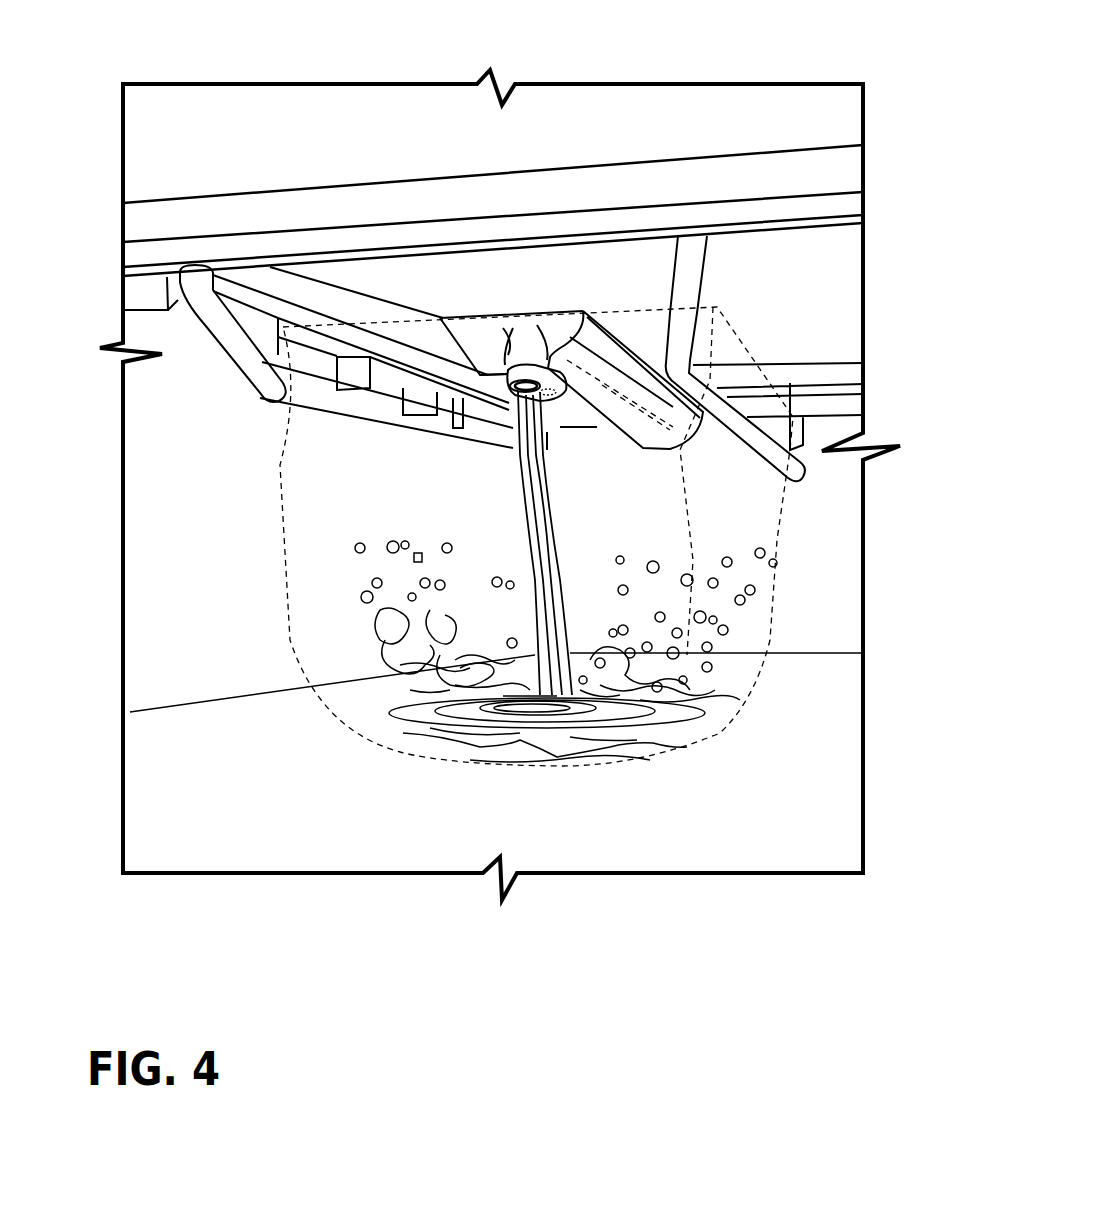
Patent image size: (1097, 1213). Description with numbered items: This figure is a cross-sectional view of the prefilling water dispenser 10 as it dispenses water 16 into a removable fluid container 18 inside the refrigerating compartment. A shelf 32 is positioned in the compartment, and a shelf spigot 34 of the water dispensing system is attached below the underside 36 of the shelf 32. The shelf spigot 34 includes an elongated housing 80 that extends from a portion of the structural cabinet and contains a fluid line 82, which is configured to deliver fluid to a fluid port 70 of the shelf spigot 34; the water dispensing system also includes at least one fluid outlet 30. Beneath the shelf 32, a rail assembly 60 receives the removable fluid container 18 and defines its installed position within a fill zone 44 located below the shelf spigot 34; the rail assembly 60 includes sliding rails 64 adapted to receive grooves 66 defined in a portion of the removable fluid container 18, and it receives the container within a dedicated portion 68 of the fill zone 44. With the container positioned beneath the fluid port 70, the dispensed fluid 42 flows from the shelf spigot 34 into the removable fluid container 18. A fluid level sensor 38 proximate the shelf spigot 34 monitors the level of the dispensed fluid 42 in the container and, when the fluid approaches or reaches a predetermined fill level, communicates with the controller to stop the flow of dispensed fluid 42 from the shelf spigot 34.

The prefilling water dispenser 10 is at (583, 287).
The water 16 is at (527, 497).
The removable fluid container 18 is at (280, 605).
The fluid outlet 30 is at (503, 352).
The shelf 32 is at (795, 165).
The shelf spigot 34 is at (633, 348).
The underside 36 is at (830, 238).
The fluid level sensor 38 is at (690, 435).
The dispensed fluid 42 is at (690, 705).
The fill zone 44 is at (410, 758).
The rail assembly 60 is at (233, 375).
The sliding rail 64 is at (690, 267).
The groove 66 is at (280, 411).
The dedicated portion 68 is at (523, 757).
The fluid port 70 is at (510, 392).
The elongated housing 80 is at (522, 366).
The fluid line 82 is at (602, 385).